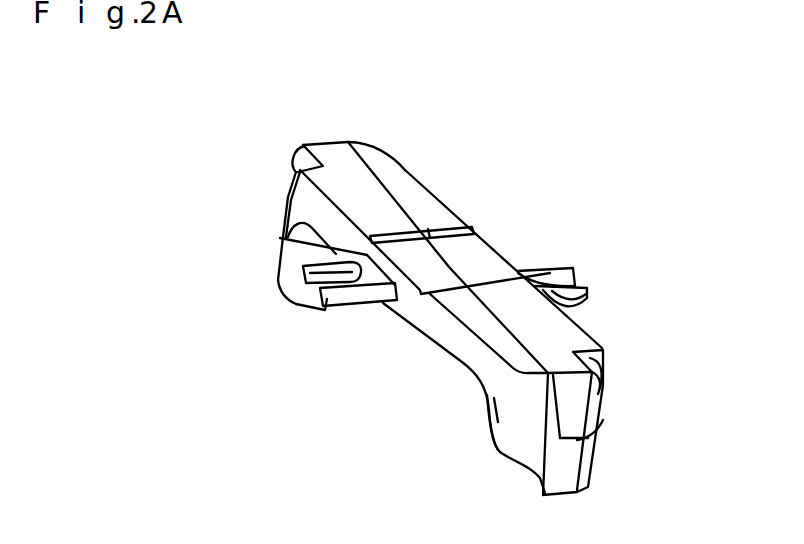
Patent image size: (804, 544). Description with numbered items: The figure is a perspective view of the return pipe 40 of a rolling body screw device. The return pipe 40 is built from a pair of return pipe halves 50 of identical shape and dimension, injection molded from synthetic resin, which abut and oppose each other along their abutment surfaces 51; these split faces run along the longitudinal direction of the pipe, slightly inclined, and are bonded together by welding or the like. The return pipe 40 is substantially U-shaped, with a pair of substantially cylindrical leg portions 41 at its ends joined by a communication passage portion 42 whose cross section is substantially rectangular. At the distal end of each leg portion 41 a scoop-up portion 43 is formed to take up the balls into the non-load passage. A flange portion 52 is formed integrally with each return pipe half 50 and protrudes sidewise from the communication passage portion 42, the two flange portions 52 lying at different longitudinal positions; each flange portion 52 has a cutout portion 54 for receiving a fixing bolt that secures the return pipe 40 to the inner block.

The return pipe 40 is at (396, 145).
The leg portion 41 is at (277, 250).
The communication passage portion 42 is at (475, 231).
The scoop-up portion 43 is at (537, 463).
The return pipe half 50 is at (428, 172).
The abutment surface 51 is at (372, 144).
The flange portion 52 is at (372, 306).
The cutout portion 54 is at (281, 270).